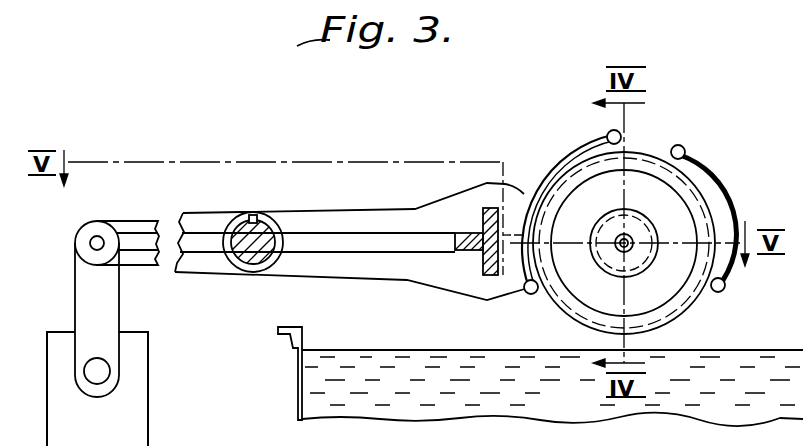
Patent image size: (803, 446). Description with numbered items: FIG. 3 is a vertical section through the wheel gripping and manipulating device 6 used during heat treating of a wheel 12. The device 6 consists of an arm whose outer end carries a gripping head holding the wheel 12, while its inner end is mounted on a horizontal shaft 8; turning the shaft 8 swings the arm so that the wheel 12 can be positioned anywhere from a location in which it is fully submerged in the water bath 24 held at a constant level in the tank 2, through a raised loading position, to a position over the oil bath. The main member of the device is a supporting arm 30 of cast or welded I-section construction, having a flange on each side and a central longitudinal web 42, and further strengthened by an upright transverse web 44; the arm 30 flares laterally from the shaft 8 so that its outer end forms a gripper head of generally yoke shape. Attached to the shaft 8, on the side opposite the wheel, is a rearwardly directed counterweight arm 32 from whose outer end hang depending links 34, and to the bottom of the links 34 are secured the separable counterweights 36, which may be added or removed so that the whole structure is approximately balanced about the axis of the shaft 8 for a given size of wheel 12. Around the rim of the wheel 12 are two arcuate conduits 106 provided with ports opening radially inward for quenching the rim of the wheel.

The tank 2 is at (298, 408).
The wheel gripping and manipulating device 6 is at (368, 285).
The horizontal shaft 8 is at (253, 258).
The wheel 12 is at (667, 287).
The water bath 24 is at (552, 388).
The supporting arm 30 is at (358, 208).
The counterweight arm 32 is at (142, 227).
The depending links 34 is at (119, 304).
The separable counterweights 36 is at (133, 406).
The central longitudinal web 42 is at (447, 243).
The upright transverse web 44 is at (489, 276).
The arcuate conduits 106 is at (553, 157).